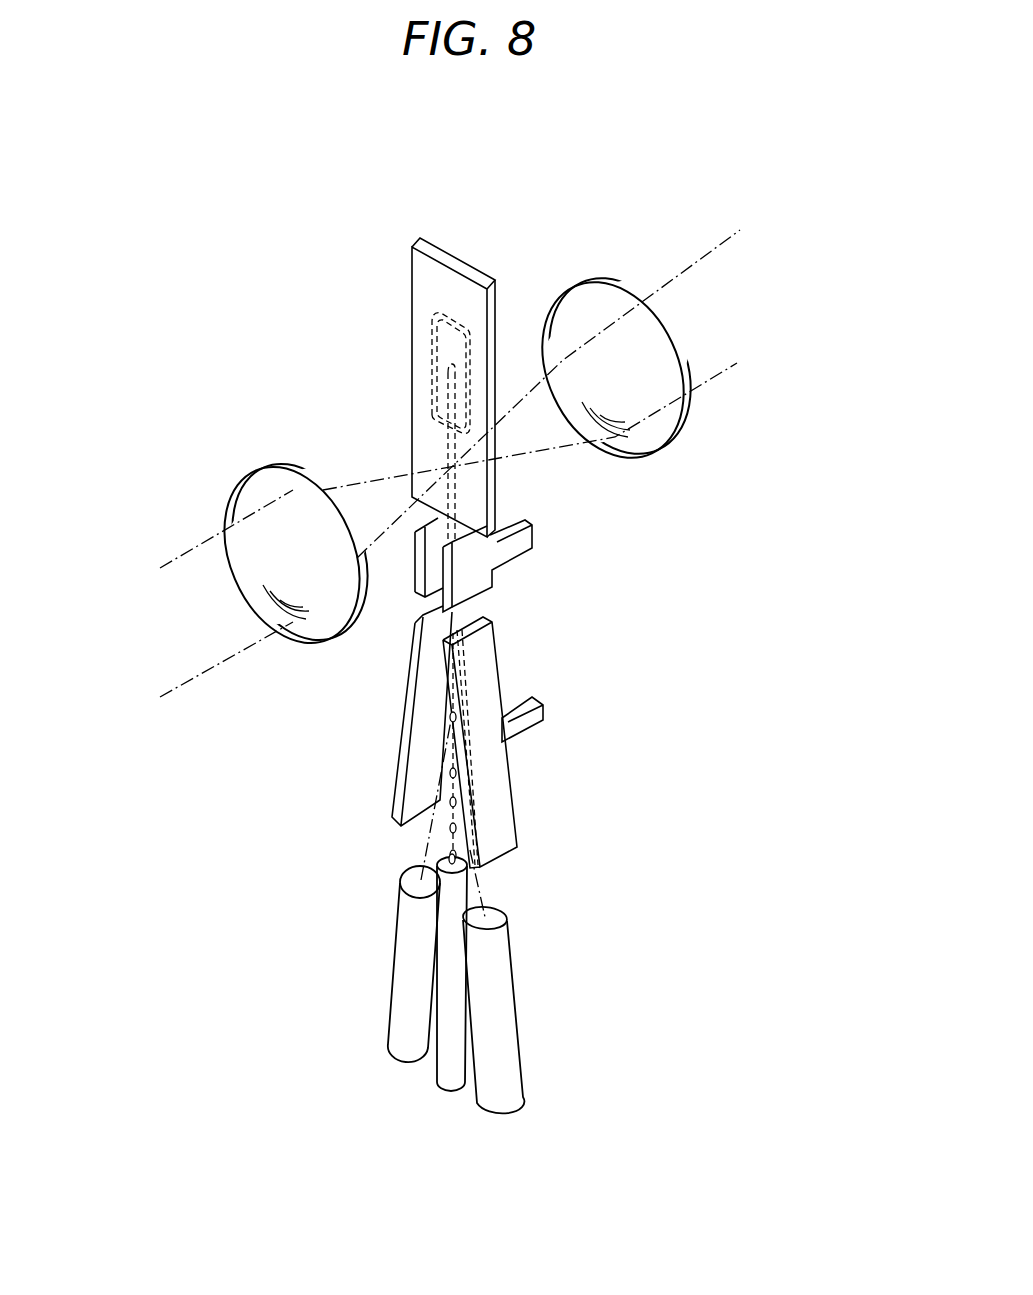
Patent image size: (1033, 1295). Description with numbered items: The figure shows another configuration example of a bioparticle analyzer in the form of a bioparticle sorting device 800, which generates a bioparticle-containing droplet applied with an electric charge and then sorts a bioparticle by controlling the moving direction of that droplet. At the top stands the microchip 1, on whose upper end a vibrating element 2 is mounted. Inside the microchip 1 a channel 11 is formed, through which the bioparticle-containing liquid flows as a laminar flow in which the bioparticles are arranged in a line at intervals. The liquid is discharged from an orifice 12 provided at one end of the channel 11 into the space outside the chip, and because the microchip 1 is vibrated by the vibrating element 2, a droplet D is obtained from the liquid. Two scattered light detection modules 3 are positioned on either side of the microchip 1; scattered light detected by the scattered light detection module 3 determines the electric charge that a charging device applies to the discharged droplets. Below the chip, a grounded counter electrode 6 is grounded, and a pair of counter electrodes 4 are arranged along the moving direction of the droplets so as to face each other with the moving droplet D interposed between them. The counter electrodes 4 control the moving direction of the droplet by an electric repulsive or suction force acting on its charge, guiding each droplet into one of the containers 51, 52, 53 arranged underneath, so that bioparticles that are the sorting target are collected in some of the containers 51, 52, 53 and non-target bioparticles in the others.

The bioparticle sorting device 800 is at (560, 214).
The microchip 1 is at (422, 297).
The vibrating element 2 is at (458, 268).
The scattered light detection module 3 is at (245, 500).
The counter electrodes 4 is at (418, 710).
The grounded counter electrode 6 is at (432, 567).
The channel 11 is at (428, 450).
The orifice 12 is at (463, 524).
The droplet D is at (440, 778).
The container 51 is at (452, 1084).
The container 52 is at (497, 1002).
The container 53 is at (403, 958).